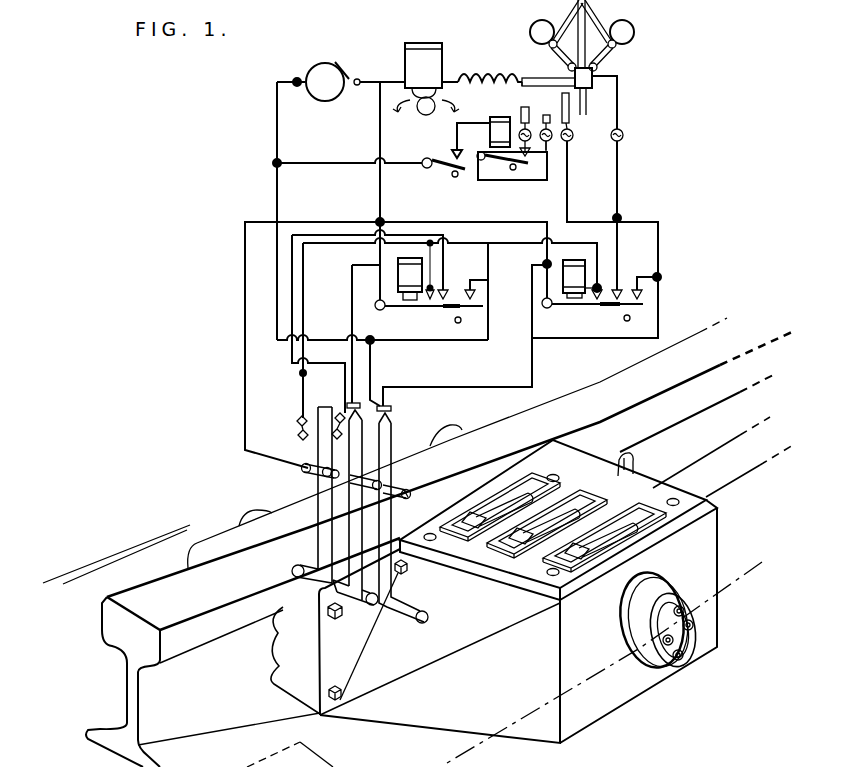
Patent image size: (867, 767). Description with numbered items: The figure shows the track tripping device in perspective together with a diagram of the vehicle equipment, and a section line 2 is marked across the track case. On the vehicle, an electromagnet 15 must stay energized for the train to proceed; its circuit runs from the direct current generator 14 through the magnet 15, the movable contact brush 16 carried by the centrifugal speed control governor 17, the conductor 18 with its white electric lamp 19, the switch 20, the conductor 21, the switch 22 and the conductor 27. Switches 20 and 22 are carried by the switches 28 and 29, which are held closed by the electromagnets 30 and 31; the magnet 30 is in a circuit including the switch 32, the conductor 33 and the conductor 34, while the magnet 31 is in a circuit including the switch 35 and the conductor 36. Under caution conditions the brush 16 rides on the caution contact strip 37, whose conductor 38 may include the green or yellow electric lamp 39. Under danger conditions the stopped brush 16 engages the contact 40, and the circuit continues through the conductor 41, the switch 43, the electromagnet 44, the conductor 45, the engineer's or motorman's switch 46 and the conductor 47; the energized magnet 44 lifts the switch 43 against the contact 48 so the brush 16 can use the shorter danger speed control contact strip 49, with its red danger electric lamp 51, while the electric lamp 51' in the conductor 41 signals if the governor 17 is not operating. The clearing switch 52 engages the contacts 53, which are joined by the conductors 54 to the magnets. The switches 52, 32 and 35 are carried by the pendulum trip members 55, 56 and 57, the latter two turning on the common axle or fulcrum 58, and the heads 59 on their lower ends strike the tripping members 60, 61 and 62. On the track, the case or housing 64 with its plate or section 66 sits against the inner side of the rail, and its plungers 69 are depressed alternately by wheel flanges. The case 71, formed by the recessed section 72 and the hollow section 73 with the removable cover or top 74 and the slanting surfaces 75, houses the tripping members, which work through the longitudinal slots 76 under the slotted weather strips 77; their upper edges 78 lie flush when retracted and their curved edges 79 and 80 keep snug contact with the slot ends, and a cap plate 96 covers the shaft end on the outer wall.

The direct current generator 14 is at (322, 73).
The electromagnet 15 is at (418, 53).
The movable contact brush 16 is at (563, 80).
The centrifugal speed control governor 17 is at (545, 20).
The conductor 18 is at (619, 170).
The white electric lamp 19 is at (623, 133).
The switch 20 is at (643, 306).
The conductor 21 is at (597, 340).
The switch 22 is at (457, 308).
The conductor 27 is at (276, 192).
The switch 28 is at (575, 306).
The switch 29 is at (424, 306).
The electromagnet 30 is at (585, 276).
The electromagnet 31 is at (421, 276).
The switch 32 is at (393, 432).
The conductor 33 is at (456, 388).
The conductor 34 is at (378, 176).
The switch 35 is at (353, 430).
The conductor 36 is at (351, 307).
The caution contact strip 37 is at (570, 115).
The conductor 38 is at (620, 219).
The green or yellow electric lamp 39 is at (571, 141).
The contact 40 is at (543, 123).
The conductor 41 is at (516, 181).
The switch 43 is at (488, 167).
The electromagnet 44 is at (490, 132).
The conductor 45 is at (453, 155).
The engineer's or motorman's switch 46 is at (443, 171).
The conductor 47 is at (338, 162).
The contact 48 is at (528, 153).
The danger speed control contact strip 49 is at (524, 106).
The red danger electric lamp 51 is at (515, 127).
The electric lamp 51' is at (580, 162).
The switch 52 is at (322, 451).
The contacts 53 is at (297, 417).
The conductors 54 is at (301, 300).
The trip member 55 is at (318, 486).
The trip member 56 is at (408, 578).
The trip member 57 is at (350, 527).
The common axle or fulcrum 58 is at (407, 491).
The heads 59 is at (297, 569).
The tripping member 60 is at (507, 492).
The tripping member 61 is at (630, 527).
The tripping member 62 is at (563, 497).
The case or housing 64 is at (176, 557).
The plate or section 66 is at (216, 533).
The plungers 69 is at (250, 517).
The case 71 is at (621, 723).
The recessed section 72 is at (268, 673).
The hollow section 73 is at (700, 641).
The removable cover or top 74 is at (627, 497).
The surfaces 75 is at (395, 712).
The longitudinal slots 76 is at (593, 543).
The slotted weather strips 77 is at (553, 569).
The upper edges 78 is at (477, 516).
The curved edge 79 is at (651, 472).
The curved edge 80 is at (424, 495).
The cap plate 96 is at (678, 632).
The section line 2 is at (613, 656).